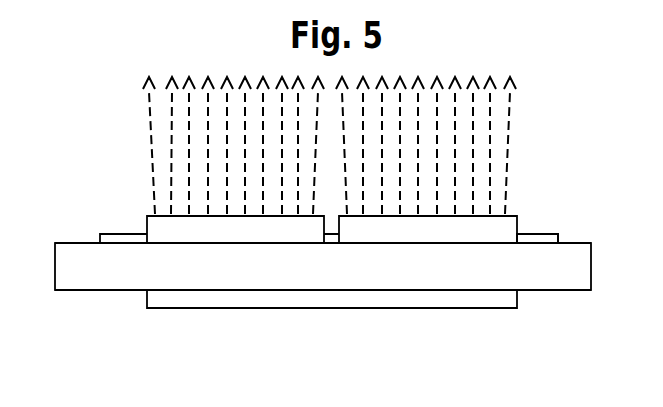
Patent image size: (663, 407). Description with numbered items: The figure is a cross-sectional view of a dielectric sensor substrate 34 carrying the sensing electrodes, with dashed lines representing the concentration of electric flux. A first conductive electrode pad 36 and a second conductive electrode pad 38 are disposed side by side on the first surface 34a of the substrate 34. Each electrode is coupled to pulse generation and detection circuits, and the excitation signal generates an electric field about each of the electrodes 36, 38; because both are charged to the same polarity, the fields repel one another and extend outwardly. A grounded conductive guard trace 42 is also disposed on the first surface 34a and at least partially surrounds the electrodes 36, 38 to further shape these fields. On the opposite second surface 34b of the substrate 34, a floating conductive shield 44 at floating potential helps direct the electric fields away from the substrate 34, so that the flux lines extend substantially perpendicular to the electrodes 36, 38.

The dielectric sensor substrate 34 is at (553, 278).
The first surface 34a is at (82, 242).
The second surface 34b is at (97, 291).
The first conductive electrode pad 36 is at (156, 214).
The second conductive electrode pad 38 is at (505, 225).
The grounded conductive guard trace 42 is at (536, 233).
The floating conductive shield 44 is at (440, 304).